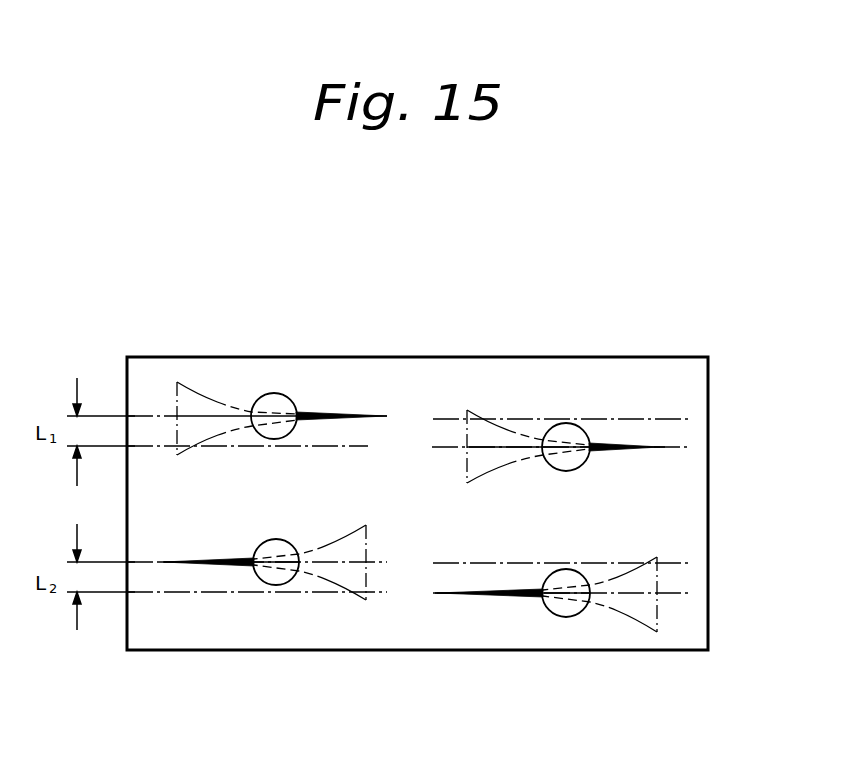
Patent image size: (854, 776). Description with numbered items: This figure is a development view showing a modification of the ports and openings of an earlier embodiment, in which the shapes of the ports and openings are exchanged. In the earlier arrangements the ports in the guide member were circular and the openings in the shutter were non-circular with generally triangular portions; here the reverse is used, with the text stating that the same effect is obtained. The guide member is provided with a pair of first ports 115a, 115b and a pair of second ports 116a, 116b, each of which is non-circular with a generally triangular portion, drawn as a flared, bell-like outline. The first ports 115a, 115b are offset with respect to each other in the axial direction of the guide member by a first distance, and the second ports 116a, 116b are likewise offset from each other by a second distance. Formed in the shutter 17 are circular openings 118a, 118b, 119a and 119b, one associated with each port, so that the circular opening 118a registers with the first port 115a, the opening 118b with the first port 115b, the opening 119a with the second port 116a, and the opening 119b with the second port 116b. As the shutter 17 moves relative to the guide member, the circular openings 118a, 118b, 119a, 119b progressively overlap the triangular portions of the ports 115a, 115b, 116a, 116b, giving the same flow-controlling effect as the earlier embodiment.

The shutter 17 is at (681, 380).
The first port 115a is at (185, 386).
The first port 115b is at (467, 410).
The opening 118a is at (294, 394).
The opening 118b is at (576, 423).
The opening 119a is at (258, 578).
The opening 119b is at (557, 617).
The second port 116a is at (323, 583).
The second port 116b is at (653, 628).